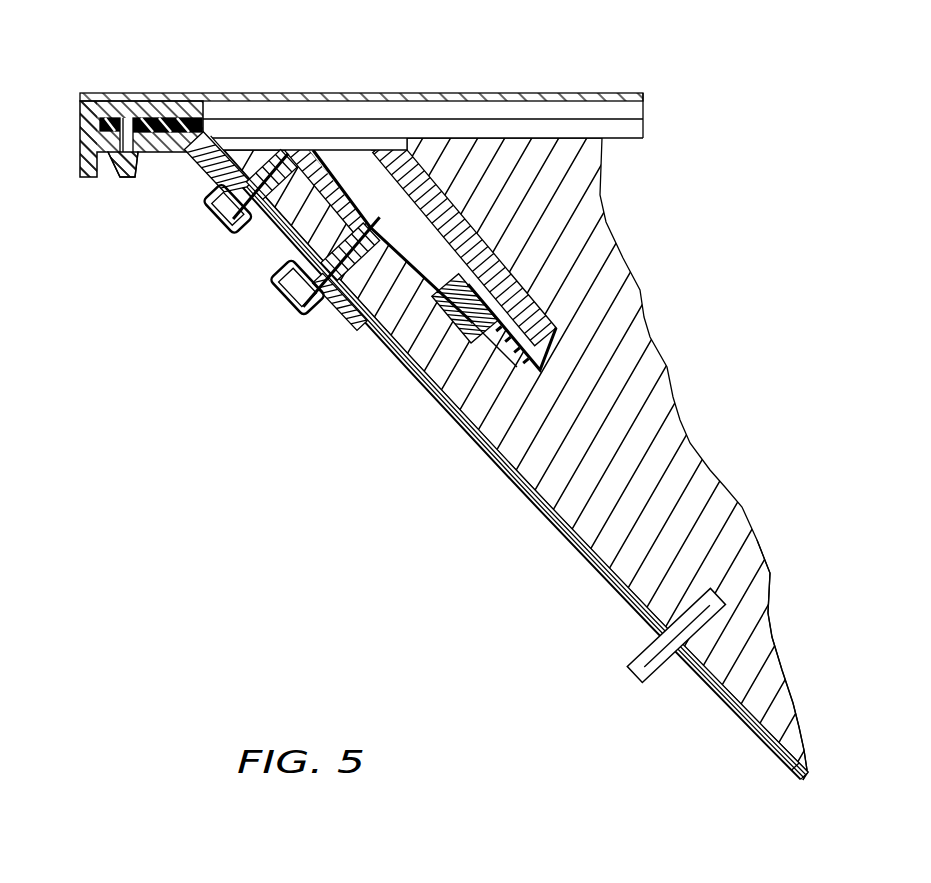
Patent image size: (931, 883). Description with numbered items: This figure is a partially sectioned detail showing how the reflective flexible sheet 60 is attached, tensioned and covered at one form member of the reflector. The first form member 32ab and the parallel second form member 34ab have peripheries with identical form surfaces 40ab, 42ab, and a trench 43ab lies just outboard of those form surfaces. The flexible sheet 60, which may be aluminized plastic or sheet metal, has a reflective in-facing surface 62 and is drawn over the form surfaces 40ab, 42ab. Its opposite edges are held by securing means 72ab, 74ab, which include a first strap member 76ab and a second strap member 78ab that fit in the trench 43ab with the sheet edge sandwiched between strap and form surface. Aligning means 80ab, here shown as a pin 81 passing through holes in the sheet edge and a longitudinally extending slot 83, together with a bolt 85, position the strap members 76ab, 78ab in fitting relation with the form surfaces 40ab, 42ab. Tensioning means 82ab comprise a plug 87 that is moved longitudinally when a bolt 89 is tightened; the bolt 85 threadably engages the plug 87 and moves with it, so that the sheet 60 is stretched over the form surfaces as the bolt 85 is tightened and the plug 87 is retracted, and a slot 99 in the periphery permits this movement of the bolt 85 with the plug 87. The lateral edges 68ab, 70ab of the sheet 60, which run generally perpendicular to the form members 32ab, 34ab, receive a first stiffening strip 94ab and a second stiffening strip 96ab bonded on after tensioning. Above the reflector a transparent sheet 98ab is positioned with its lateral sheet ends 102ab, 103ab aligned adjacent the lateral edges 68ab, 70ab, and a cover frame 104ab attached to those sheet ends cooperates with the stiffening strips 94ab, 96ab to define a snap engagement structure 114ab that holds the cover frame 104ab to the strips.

The lateral sheet end 102ab is at (187, 173).
The lateral sheet end 103ab is at (124, 210).
The cover frame 104ab is at (75, 158).
The snap engagement structure 114ab is at (128, 198).
The lateral edge 68ab is at (305, 104).
The lateral edge 70ab is at (250, 150).
The tensioning means 82ab is at (427, 215).
The transparent sheet 98ab is at (621, 93).
The plug 87 is at (464, 240).
The bolt 89 is at (501, 320).
The first form member 32ab is at (465, 441).
The second form member 34ab is at (465, 441).
The first stiffening strip 94ab is at (217, 166).
The second stiffening strip 96ab is at (217, 166).
The bolt 85 is at (296, 218).
The slot 99 is at (340, 301).
The form surface 40ab is at (503, 448).
The form surface 42ab is at (503, 448).
The trench 43ab is at (507, 456).
The securing means 72ab is at (502, 461).
The securing means 74ab is at (502, 461).
The first strap member 76ab is at (505, 458).
The second strap member 78ab is at (505, 458).
The pin 81 is at (676, 635).
The longitudinally extending slot 83 is at (677, 636).
The reflective in-facing surface 62 is at (765, 715).
The flexible sheet 60 is at (800, 771).
The aligning means 80ab is at (465, 441).